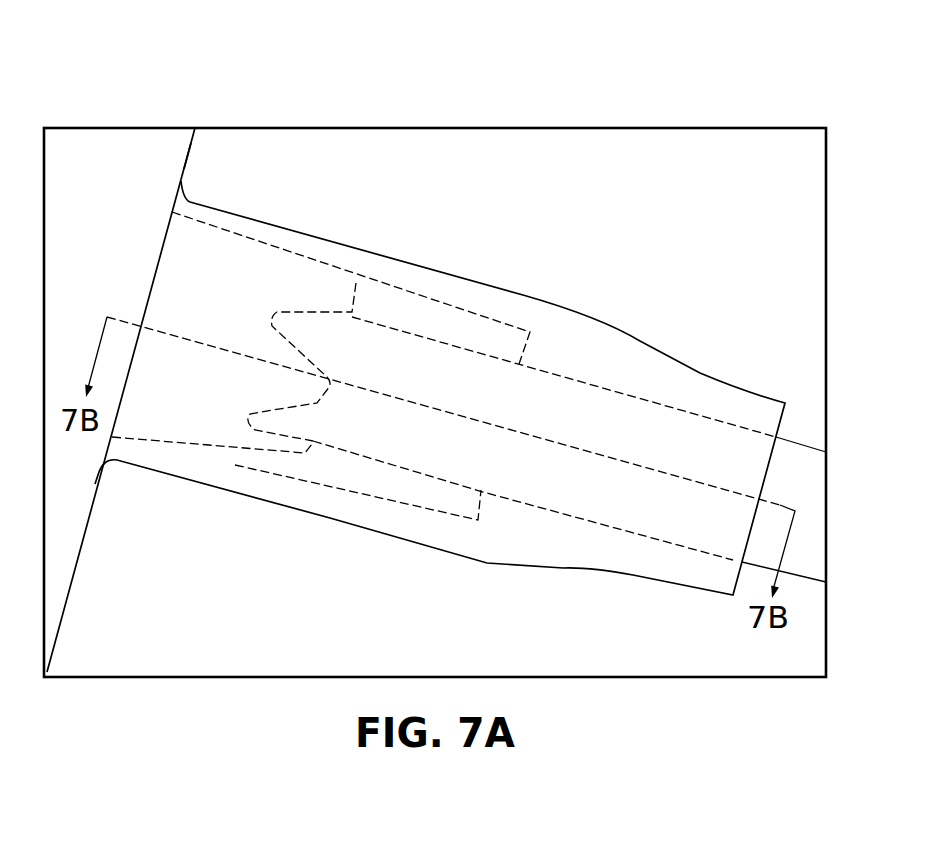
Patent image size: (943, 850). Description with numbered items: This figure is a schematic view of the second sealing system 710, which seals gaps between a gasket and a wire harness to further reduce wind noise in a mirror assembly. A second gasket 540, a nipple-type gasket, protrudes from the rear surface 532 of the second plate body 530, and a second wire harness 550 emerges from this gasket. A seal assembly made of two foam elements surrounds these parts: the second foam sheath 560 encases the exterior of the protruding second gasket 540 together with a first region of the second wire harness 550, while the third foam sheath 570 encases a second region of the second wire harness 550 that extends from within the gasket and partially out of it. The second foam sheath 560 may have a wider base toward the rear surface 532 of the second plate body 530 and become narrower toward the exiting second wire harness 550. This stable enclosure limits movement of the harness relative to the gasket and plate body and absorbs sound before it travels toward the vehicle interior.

The second plate body 530 is at (182, 147).
The rear surface 532 is at (202, 155).
The second gasket 540 is at (173, 407).
The second wire harness 550 is at (575, 483).
The second foam sheath 560 is at (638, 340).
The third foam sheath 570 is at (350, 463).
The second sealing system 710 is at (600, 127).